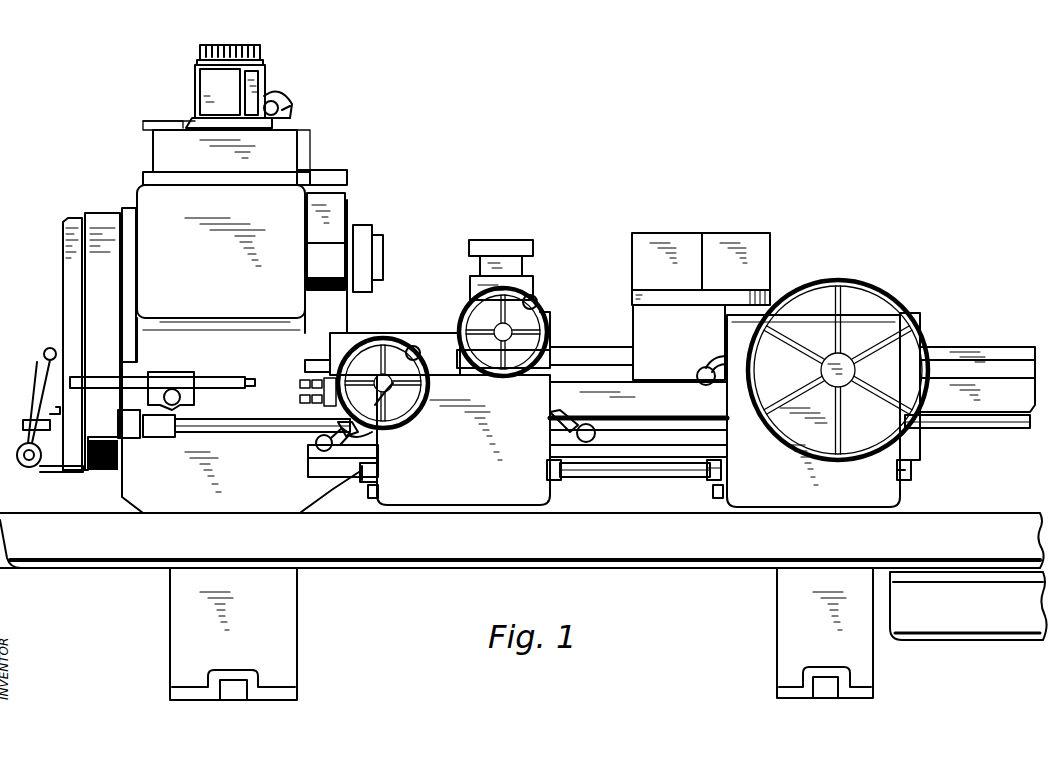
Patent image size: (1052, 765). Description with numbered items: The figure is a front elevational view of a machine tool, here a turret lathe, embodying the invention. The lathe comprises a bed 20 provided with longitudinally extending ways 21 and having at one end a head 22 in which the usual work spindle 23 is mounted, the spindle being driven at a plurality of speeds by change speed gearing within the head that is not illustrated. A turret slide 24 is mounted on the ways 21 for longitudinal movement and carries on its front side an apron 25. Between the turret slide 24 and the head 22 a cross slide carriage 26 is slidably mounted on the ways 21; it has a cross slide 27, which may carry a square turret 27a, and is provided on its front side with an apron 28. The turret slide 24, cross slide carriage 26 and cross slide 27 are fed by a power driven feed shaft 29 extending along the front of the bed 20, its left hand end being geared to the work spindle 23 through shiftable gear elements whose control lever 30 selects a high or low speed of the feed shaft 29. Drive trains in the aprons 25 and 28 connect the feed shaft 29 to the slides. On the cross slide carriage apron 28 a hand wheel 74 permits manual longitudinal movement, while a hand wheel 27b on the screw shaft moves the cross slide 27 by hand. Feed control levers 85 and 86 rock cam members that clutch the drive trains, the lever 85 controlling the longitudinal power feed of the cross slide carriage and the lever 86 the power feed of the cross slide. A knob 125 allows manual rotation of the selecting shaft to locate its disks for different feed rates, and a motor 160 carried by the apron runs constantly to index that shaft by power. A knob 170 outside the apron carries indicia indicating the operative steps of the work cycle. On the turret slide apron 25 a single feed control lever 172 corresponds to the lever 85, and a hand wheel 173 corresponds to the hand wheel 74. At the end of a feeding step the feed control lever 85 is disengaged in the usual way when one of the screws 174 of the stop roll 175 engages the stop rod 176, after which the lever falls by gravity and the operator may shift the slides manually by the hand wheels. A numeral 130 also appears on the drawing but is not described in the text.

The bed 20 is at (955, 432).
The ways 21 is at (955, 346).
The head 22 is at (273, 195).
The work spindle 23 is at (368, 230).
The turret slide 24 is at (745, 325).
The apron 25 is at (823, 410).
The cross slide carriage 26 is at (405, 332).
The cross slide 27 is at (538, 318).
The square turret 27a is at (513, 244).
The hand wheel 27b is at (545, 340).
The apron 28 is at (463, 440).
The feed shaft 29 is at (248, 433).
The control lever 30 is at (36, 388).
The hand wheel 74 is at (430, 383).
The feed control lever 85 is at (375, 432).
The feed control lever 86 is at (560, 413).
The knob 125 is at (378, 498).
The stop 130 is at (707, 474).
The motor 160 is at (378, 472).
The knob 170 is at (561, 476).
The feed control lever 172 is at (708, 362).
The hand wheel 173 is at (878, 302).
The screws 174 is at (300, 399).
The stop roll 175 is at (316, 368).
The stop rod 176 is at (220, 382).